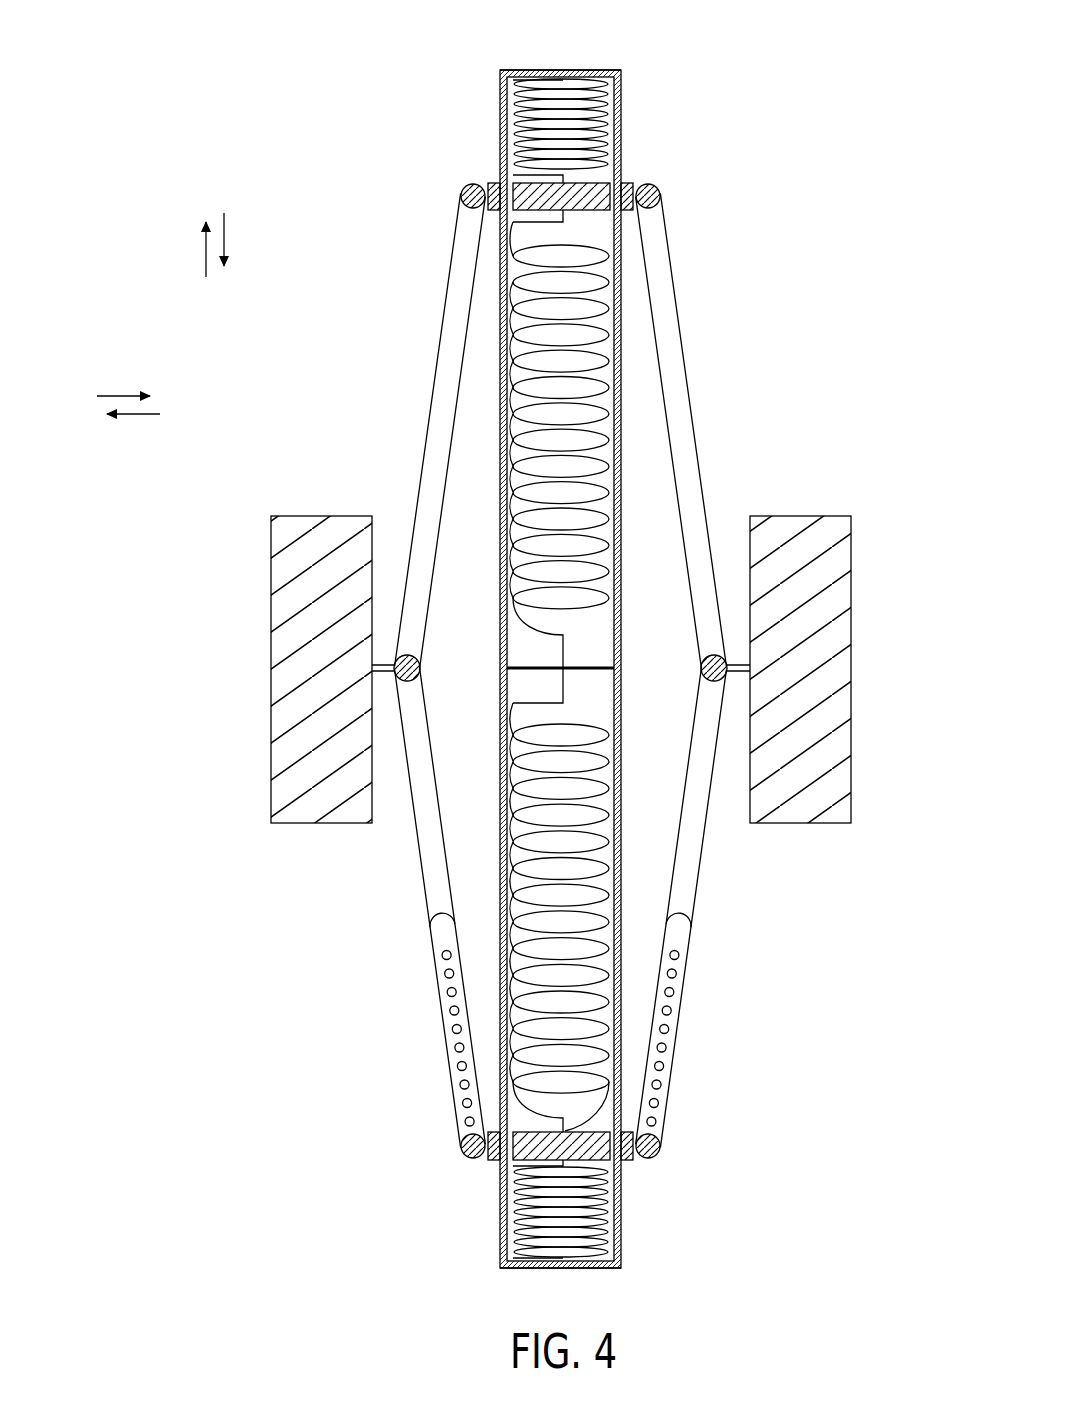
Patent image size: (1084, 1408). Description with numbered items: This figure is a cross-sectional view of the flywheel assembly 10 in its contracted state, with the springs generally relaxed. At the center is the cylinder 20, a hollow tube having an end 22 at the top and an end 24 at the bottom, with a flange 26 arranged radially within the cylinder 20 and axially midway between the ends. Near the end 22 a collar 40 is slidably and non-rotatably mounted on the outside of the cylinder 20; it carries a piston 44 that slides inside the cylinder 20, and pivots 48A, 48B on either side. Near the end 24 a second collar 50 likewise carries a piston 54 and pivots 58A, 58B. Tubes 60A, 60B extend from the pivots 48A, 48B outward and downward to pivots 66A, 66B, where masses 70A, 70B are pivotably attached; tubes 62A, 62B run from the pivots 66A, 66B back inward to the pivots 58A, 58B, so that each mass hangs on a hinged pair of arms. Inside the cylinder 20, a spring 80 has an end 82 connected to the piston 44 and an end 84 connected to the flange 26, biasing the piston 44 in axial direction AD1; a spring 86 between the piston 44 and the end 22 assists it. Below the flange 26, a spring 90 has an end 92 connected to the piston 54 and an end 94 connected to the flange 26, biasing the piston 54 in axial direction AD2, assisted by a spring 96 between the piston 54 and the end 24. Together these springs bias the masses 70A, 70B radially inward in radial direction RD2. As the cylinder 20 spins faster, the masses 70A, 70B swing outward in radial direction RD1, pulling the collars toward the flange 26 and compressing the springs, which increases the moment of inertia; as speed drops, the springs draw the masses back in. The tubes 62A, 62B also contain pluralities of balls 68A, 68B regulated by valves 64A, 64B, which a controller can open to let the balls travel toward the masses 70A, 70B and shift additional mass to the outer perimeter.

The flywheel assembly 10 is at (230, 89).
The cylinder 20 is at (620, 128).
The end 22 is at (597, 70).
The end 24 is at (600, 1268).
The flange 26 is at (595, 670).
The collar 40 is at (630, 184).
The piston 44 is at (530, 195).
The pivot 48A is at (468, 193).
The pivot 48B is at (653, 199).
The collar 50 is at (626, 1156).
The piston 54 is at (516, 1165).
The pivot 58A is at (467, 1158).
The pivot 58B is at (652, 1152).
The tube 60A is at (443, 378).
The tube 60B is at (674, 400).
The tube 62A is at (420, 830).
The tube 62B is at (705, 875).
The valve 64A is at (440, 935).
The valve 64B is at (680, 935).
The pivot 66A is at (410, 660).
The pivot 66B is at (718, 660).
The balls 68A is at (440, 1032).
The balls 68B is at (685, 1005).
The mass 70A is at (285, 650).
The mass 70B is at (838, 652).
The spring 80 is at (565, 525).
The end 82 is at (562, 212).
The end 84 is at (562, 668).
The spring 86 is at (613, 82).
The spring 90 is at (515, 820).
The end 92 is at (600, 1110).
The end 94 is at (562, 668).
The spring 96 is at (516, 1268).
The axial direction AD1 is at (206, 258).
The axial direction AD2 is at (224, 228).
The radial direction RD1 is at (125, 416).
The radial direction RD2 is at (121, 395).